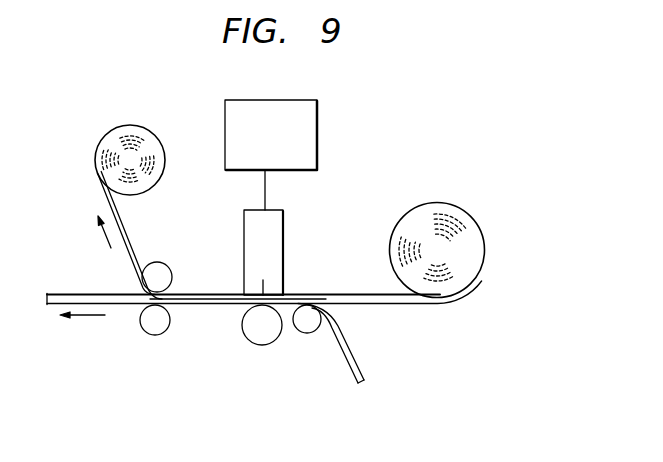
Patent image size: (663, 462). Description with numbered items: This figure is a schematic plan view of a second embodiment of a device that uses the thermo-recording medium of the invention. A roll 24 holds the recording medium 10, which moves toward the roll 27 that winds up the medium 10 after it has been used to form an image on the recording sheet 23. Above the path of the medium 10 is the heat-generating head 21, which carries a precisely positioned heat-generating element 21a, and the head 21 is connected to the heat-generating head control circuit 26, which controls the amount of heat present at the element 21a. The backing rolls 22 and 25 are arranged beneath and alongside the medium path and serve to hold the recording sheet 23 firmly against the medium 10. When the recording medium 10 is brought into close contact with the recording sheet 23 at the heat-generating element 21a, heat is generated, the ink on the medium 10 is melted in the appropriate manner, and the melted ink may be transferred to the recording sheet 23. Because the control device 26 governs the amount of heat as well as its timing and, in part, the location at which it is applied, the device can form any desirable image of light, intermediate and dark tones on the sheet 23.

The recording medium 10 is at (355, 294).
The heat-generating head 21 is at (272, 230).
The heat-generating element 21a is at (263, 282).
The backing roll 22 is at (262, 340).
The recording sheet 23 is at (362, 367).
The roll 24 is at (473, 257).
The backing roll 25 is at (165, 270).
The heat-generating head control circuit 26 is at (302, 146).
The roll 27 is at (152, 150).